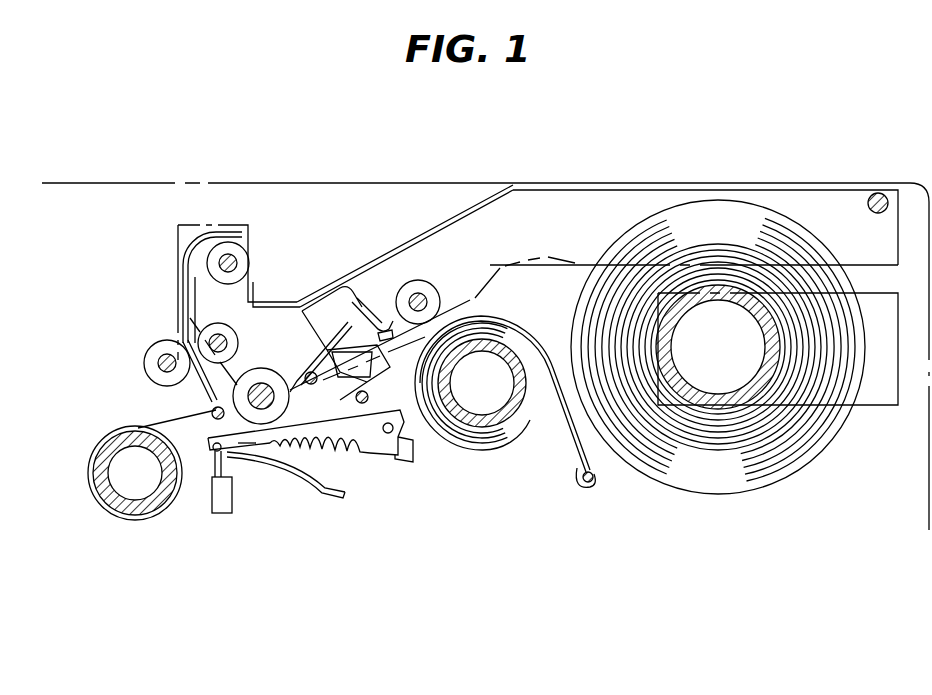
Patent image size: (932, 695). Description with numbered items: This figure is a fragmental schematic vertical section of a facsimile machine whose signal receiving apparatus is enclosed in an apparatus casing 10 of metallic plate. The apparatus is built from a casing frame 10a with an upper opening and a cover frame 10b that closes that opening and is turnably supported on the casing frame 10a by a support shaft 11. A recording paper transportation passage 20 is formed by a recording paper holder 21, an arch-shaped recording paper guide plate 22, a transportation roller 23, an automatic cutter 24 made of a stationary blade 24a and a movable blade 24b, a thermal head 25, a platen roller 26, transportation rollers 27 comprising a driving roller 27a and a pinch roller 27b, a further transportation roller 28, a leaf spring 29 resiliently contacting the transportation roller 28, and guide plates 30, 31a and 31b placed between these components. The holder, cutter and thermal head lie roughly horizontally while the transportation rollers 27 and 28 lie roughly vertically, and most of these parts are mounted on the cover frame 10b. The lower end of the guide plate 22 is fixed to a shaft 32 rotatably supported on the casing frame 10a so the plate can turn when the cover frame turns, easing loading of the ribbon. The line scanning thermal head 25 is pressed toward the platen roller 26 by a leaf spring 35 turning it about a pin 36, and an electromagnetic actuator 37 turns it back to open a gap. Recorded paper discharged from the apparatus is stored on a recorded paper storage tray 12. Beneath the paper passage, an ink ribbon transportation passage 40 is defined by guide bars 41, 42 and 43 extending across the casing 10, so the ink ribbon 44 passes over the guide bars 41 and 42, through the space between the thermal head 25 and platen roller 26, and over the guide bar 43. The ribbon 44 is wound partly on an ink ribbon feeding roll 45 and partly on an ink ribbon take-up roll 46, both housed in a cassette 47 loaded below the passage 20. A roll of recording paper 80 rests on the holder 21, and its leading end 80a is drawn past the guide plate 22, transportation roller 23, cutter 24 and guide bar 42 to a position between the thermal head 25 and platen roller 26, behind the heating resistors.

The apparatus casing 10 is at (207, 181).
The casing frame 10a is at (927, 480).
The cover frame 10b is at (727, 182).
The support shaft 11 is at (879, 192).
The recorded paper storage tray 12 is at (454, 220).
The recording paper transportation passage 20 is at (407, 222).
The recording paper holder 21 is at (835, 412).
The recording paper guide plate 22 is at (502, 318).
The transportation roller 23 is at (432, 294).
The automatic cutter 24 is at (329, 294).
The stationary blade 24a is at (358, 300).
The movable blade 24b is at (327, 348).
The thermal head 25 is at (240, 444).
The platen roller 26 is at (258, 378).
The transportation rollers 27 is at (147, 353).
The driving roller 27a is at (221, 338).
The pinch roller 27b is at (147, 364).
The transportation roller 28 is at (245, 256).
The leaf spring 29 is at (213, 231).
The guide plate 30 is at (333, 327).
The guide plate 31a is at (193, 278).
The guide plate 31b is at (182, 326).
The shaft 32 is at (591, 484).
The leaf spring 35 is at (300, 475).
The pin 36 is at (389, 434).
The electromagnetic actuator 37 is at (218, 513).
The ink ribbon transportation passage 40 is at (392, 385).
The guide bar 41 is at (361, 405).
The guide bar 42 is at (311, 385).
The guide bar 43 is at (213, 419).
The ink ribbon 44 is at (150, 426).
The ink ribbon feeding roll 45 is at (494, 425).
The ink ribbon take-up roll 46 is at (141, 512).
The cassette 47 is at (101, 510).
The roll of recording paper 80 is at (766, 490).
The leading end 80a is at (372, 340).